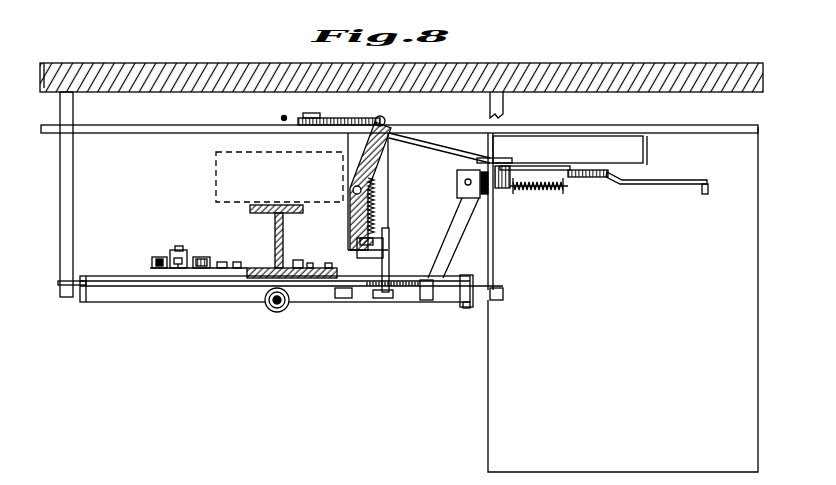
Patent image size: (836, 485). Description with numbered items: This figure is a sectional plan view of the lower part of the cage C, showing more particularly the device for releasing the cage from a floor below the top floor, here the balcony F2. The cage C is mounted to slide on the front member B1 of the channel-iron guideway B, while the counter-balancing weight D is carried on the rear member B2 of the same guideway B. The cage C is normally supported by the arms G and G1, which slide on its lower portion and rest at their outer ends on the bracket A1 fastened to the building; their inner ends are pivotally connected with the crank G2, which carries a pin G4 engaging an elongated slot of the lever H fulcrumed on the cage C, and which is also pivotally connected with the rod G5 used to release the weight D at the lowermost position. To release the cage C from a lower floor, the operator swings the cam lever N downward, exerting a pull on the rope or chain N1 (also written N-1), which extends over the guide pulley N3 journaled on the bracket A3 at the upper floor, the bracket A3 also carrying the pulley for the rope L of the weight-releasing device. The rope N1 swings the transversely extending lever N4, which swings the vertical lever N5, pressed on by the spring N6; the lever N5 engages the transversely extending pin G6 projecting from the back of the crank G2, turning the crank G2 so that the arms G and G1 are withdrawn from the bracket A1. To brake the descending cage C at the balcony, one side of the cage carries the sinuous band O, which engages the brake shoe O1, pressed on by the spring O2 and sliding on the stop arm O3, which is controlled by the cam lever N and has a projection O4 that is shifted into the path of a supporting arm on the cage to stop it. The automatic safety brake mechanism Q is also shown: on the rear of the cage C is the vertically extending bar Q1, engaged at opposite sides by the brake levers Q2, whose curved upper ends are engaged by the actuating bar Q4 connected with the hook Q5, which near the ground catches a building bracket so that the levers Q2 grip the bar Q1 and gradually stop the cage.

The bracket A1 is at (66, 246).
The bracket A3 is at (223, 128).
The balcony F2 is at (623, 299).
The counter-balancing weight D is at (216, 180).
The rope or chain L is at (280, 117).
The guide pulley N3 is at (333, 110).
The rope or chain N1 is at (376, 120).
The transversely extending lever N4 is at (373, 163).
The rope or chain N-1 is at (436, 146).
The spring N6 is at (376, 198).
The vertical lever N5 is at (374, 234).
The transversely extending pin G6 is at (390, 254).
The projection O4 is at (482, 158).
The brake shoe O1 is at (510, 164).
The stop arm O3 is at (621, 160).
The sinuous band O is at (498, 192).
The spring O2 is at (532, 192).
The cam lever N is at (627, 186).
The lever H is at (443, 302).
The rear member of guideway B2 is at (283, 212).
The front member of guideway B1 is at (290, 270).
The guideway B is at (204, 249).
The safety brake mechanism Q is at (164, 258).
The vertically extending bar Q1 is at (177, 266).
The brake levers Q2 is at (152, 262).
The actuating bar Q4 is at (166, 245).
The hook Q5 is at (180, 248).
The cage C is at (276, 306).
The supporting arm G1 is at (143, 288).
The rod G5 is at (343, 300).
The pin G4 is at (381, 300).
The crank G2 is at (405, 301).
The supporting arm G is at (505, 290).